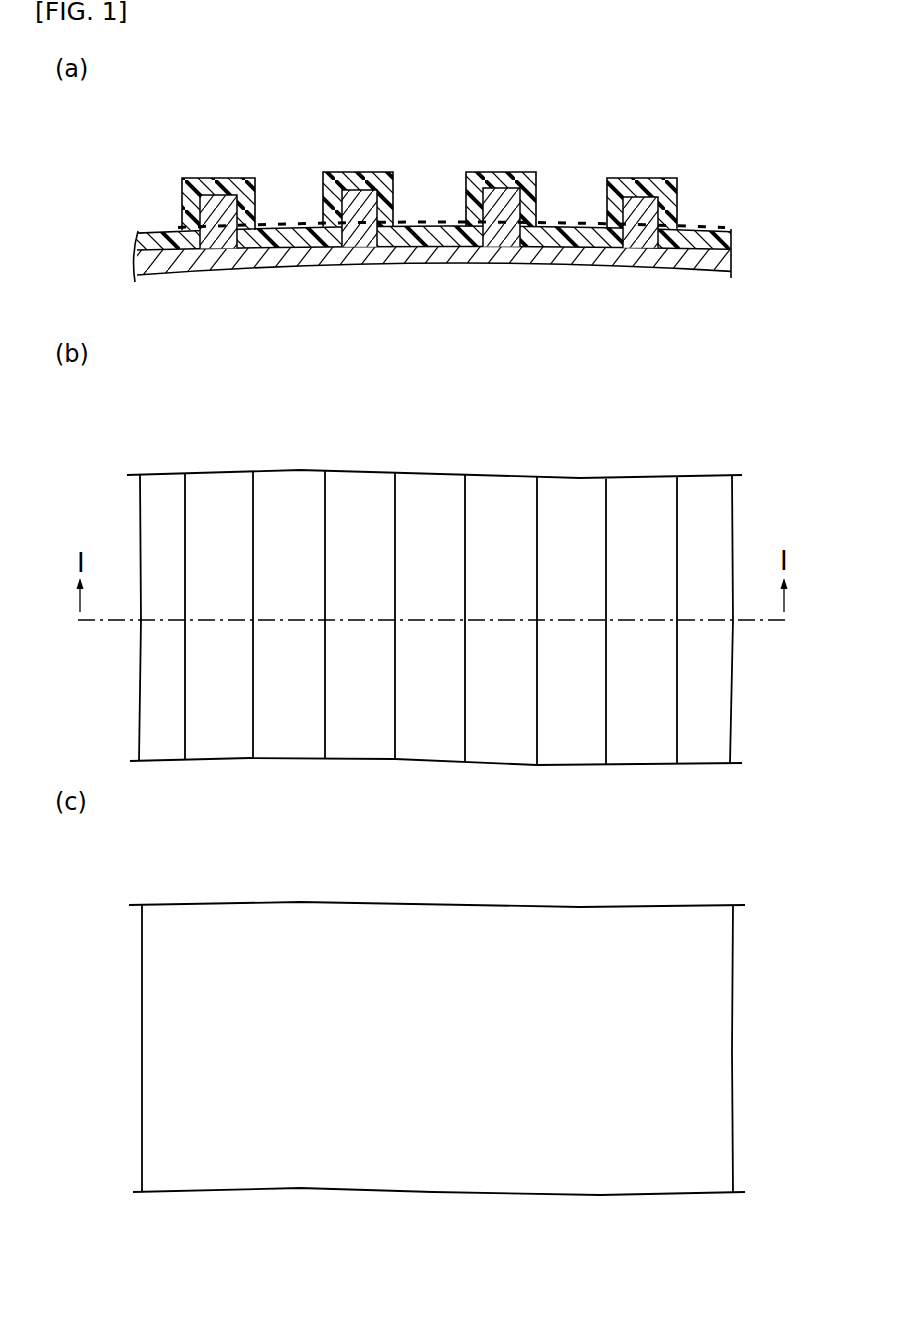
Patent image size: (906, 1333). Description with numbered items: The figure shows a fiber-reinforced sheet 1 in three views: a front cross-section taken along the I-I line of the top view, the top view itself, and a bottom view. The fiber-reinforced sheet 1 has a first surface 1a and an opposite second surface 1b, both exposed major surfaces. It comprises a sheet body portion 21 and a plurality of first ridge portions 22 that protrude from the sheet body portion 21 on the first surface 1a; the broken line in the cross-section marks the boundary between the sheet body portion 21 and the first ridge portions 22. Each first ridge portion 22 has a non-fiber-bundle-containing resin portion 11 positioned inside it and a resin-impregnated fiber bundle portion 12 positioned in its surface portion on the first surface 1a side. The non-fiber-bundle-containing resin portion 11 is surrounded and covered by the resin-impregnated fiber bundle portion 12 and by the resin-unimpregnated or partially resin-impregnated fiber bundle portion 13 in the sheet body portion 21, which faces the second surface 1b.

The fiber-reinforced sheet 1 is at (159, 146).
The first surface 1a is at (220, 178).
The second surface 1b is at (218, 267).
The non-fiber-bundle-containing resin portion 11 is at (359, 178).
The resin-impregnated fiber bundle portion 12 is at (431, 226).
The resin-unimpregnated fiber bundle portion or partially resin-impregnated fiber bu 13 is at (418, 262).
The sheet body portion 21 is at (503, 263).
The first ridge portion 22 is at (512, 167).